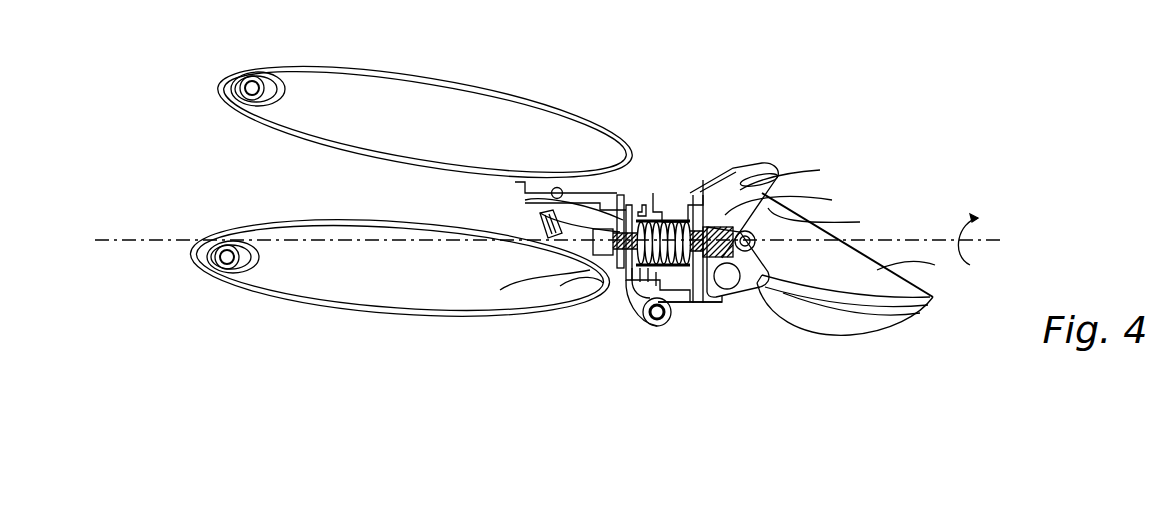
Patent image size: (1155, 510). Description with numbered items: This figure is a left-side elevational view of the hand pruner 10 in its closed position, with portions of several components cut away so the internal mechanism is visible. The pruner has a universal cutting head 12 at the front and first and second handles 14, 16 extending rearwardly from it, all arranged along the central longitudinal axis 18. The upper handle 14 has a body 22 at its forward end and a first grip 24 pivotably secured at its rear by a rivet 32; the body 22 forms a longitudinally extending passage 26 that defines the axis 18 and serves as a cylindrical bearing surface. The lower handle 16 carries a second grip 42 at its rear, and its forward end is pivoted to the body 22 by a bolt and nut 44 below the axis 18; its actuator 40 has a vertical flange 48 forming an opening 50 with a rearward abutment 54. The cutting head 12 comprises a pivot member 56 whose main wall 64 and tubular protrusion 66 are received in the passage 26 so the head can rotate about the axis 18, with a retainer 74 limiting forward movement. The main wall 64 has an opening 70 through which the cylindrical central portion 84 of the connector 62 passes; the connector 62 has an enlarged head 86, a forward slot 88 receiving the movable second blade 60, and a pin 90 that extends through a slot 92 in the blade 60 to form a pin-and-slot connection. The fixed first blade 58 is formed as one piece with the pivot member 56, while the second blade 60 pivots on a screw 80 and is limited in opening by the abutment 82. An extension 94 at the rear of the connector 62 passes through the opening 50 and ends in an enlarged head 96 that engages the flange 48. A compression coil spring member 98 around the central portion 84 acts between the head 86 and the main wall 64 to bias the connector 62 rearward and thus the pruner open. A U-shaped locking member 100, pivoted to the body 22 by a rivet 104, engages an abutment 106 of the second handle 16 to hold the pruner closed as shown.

The hand pruner 10 is at (906, 110).
The universal cutting head 12 is at (736, 170).
The first handle 14 is at (385, 68).
The second handle 16 is at (332, 313).
The central longitudinal axis 18 is at (932, 240).
The body 22 is at (680, 206).
The first grip 24 is at (445, 78).
The passage 26 is at (678, 200).
The rivet 32 is at (234, 80).
The actuator 40 is at (622, 195).
The second grip 42 is at (393, 320).
The bolt and nut 44 is at (657, 326).
The flange 48 is at (590, 275).
The opening 50 is at (542, 222).
The rearward abutment 54 is at (600, 201).
The pivot member 56 is at (748, 180).
The first blade 58 is at (850, 327).
The second blade 60 is at (935, 265).
The connector 62 is at (735, 204).
The main wall 64 is at (700, 304).
The protrusion 66 is at (678, 303).
The opening 70 is at (723, 229).
The retainer 74 is at (645, 298).
The screw 80 is at (728, 304).
The abutment 82 is at (742, 190).
The central portion 84 is at (695, 304).
The head 86 is at (628, 280).
The slot 88 is at (840, 222).
The pin 90 is at (730, 283).
The slot 92 is at (772, 282).
The extension 94 is at (591, 247).
The enlarged head 96 is at (523, 313).
The spring member 98 is at (636, 182).
The locking member 100 is at (530, 225).
The rivet 104 is at (557, 187).
The abutment 106 is at (482, 223).